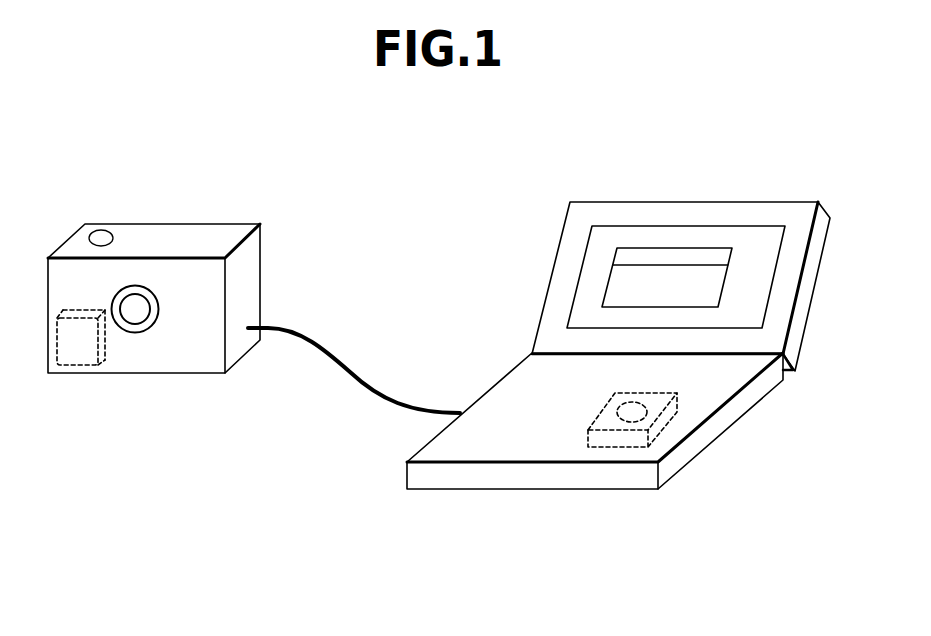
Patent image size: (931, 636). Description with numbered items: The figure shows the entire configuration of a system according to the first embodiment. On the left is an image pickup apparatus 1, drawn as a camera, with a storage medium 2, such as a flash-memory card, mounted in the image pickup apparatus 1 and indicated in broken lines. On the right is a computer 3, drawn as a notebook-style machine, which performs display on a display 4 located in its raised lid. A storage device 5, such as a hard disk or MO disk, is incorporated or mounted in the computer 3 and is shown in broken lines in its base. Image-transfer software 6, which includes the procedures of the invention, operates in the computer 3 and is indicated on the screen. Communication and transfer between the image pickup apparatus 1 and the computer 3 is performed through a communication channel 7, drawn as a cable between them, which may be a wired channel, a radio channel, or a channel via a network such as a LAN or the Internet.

The image pickup apparatus 1 is at (163, 232).
The storage medium 2 is at (83, 347).
The computer 3 is at (737, 410).
The display 4 is at (677, 238).
The storage device 5 is at (617, 440).
The image-transfer software 6 is at (628, 282).
The communication channel 7 is at (320, 343).